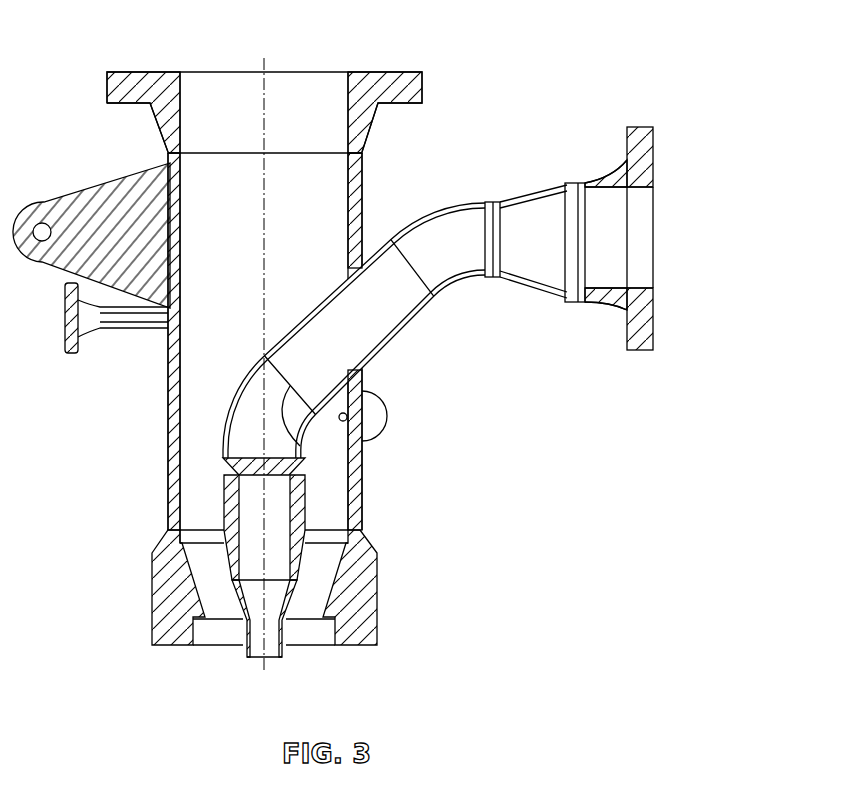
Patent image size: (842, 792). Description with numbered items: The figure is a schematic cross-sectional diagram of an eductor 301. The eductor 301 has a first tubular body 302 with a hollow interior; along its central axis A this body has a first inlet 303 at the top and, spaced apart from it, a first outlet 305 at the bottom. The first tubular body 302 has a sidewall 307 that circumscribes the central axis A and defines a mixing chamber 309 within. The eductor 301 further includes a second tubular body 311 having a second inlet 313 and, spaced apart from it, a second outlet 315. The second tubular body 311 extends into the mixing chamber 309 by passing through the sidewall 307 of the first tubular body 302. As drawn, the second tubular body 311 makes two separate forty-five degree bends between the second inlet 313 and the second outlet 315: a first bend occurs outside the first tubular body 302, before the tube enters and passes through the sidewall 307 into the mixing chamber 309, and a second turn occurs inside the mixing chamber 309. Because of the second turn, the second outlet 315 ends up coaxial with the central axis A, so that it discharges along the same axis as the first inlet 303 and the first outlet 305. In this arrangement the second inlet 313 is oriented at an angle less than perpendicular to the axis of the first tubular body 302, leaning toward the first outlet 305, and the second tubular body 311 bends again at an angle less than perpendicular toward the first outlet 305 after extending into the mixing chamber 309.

The eductor 301 is at (457, 427).
The first tubular body 302 is at (147, 460).
The first inlet 303 is at (260, 47).
The first outlet 305 is at (297, 663).
The sidewall 307 is at (365, 468).
The mixing chamber 309 is at (318, 487).
The second tubular body 311 is at (395, 350).
The second inlet 313 is at (670, 275).
The second outlet 315 is at (250, 668).